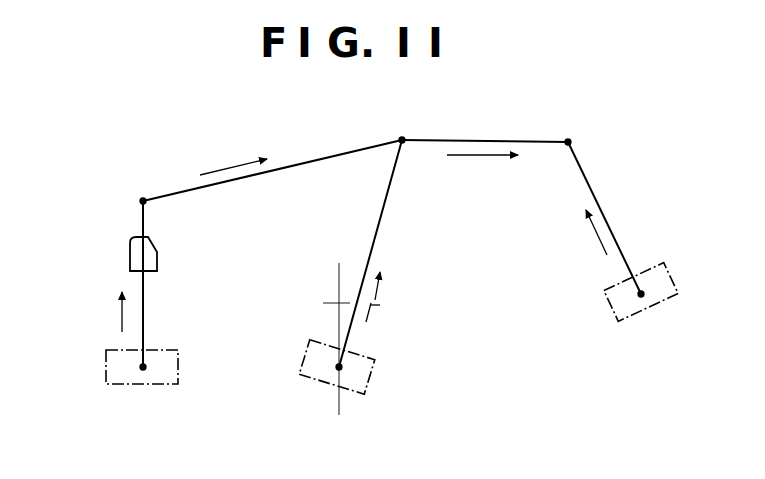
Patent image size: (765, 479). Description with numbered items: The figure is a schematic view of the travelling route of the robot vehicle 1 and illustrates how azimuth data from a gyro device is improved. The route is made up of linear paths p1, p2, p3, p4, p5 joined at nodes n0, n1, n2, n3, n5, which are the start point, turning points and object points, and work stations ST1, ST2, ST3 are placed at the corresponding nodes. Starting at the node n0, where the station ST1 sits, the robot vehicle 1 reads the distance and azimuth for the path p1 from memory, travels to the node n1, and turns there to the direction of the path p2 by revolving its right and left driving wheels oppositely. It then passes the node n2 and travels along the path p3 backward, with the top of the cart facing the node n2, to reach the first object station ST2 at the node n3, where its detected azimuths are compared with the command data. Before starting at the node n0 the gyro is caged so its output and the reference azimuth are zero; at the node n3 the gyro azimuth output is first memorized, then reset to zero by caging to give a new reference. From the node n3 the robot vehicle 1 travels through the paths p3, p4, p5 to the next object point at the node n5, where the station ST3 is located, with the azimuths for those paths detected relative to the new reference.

The robot vehicle 1 is at (130, 255).
The start point node n0 is at (147, 372).
The turning point node n1 is at (143, 198).
The turning point node n2 is at (402, 137).
The object point node n3 is at (335, 371).
The object point node n5 is at (656, 334).
The path p1 is at (143, 313).
The path p2 is at (296, 163).
The path p3 is at (378, 228).
The path p4 is at (484, 141).
The path p5 is at (602, 209).
The work station ST1 is at (120, 375).
The work station ST2 is at (360, 382).
The work station ST3 is at (623, 306).